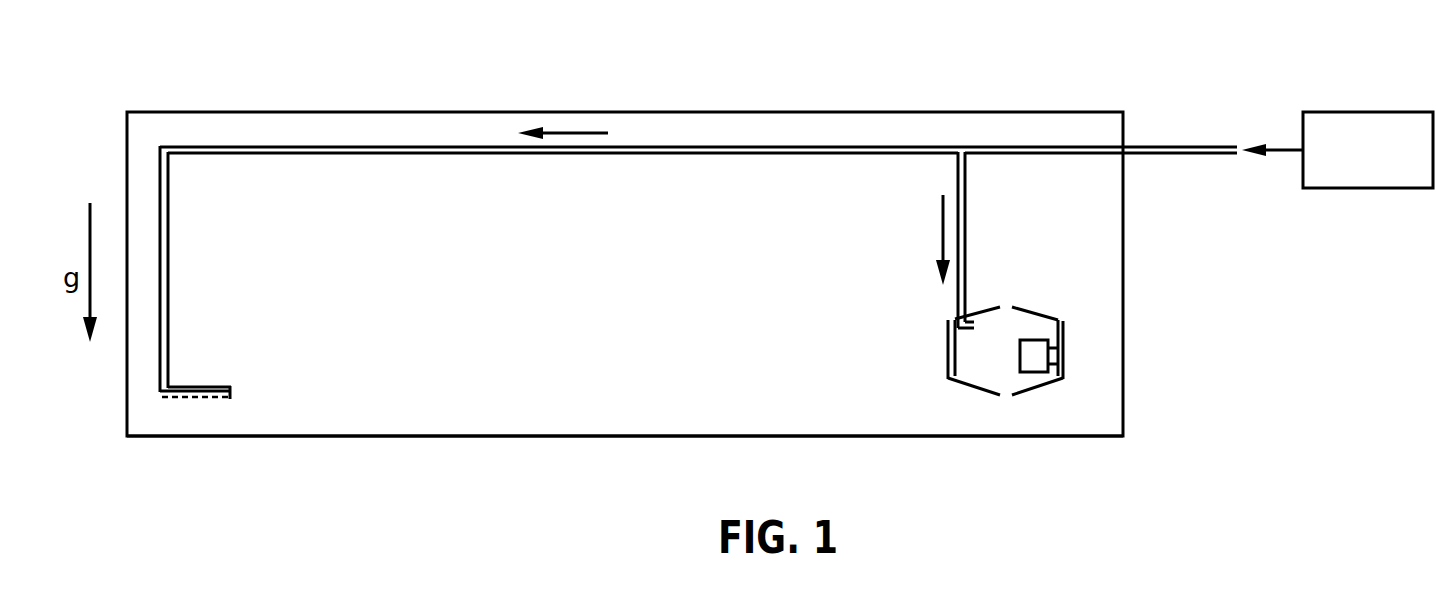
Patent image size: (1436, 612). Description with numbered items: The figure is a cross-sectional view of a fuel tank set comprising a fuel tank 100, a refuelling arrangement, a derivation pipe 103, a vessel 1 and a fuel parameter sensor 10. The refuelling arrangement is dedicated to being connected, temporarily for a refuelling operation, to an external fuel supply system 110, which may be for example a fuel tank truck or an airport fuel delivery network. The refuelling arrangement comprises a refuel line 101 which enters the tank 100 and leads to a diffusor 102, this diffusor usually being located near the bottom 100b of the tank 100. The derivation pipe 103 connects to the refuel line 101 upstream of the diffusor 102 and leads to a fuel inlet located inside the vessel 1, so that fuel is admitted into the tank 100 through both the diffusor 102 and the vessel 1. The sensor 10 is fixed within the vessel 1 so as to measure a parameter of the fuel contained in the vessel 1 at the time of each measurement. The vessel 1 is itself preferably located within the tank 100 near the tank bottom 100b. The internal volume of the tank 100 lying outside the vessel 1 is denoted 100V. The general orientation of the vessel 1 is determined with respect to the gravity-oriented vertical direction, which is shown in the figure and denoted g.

The vessel 1 is at (973, 388).
The fuel parameter sensor 10 is at (1043, 340).
The fuel tank 100 is at (964, 112).
The bottom of the tank 100b is at (490, 437).
The internal volume of the tank 100V is at (660, 285).
The refuel line 101 is at (1072, 148).
The diffusor 102 is at (207, 387).
The derivation pipe 103 is at (967, 215).
The external fuel supply system 110 is at (1396, 112).